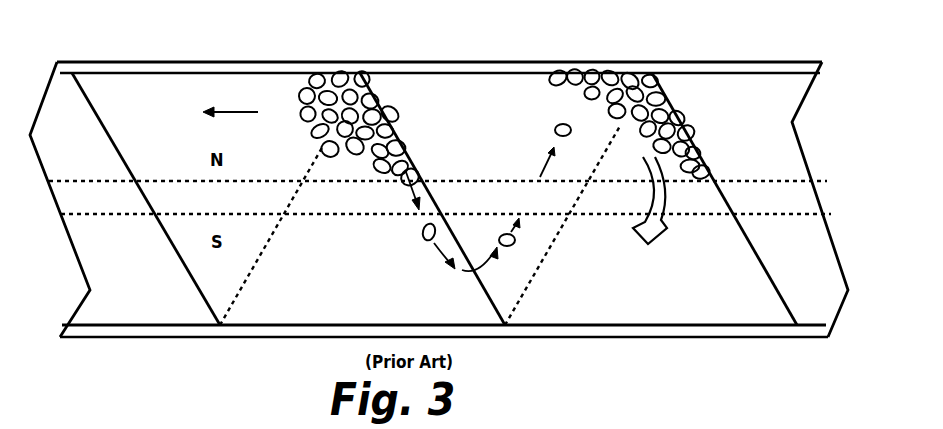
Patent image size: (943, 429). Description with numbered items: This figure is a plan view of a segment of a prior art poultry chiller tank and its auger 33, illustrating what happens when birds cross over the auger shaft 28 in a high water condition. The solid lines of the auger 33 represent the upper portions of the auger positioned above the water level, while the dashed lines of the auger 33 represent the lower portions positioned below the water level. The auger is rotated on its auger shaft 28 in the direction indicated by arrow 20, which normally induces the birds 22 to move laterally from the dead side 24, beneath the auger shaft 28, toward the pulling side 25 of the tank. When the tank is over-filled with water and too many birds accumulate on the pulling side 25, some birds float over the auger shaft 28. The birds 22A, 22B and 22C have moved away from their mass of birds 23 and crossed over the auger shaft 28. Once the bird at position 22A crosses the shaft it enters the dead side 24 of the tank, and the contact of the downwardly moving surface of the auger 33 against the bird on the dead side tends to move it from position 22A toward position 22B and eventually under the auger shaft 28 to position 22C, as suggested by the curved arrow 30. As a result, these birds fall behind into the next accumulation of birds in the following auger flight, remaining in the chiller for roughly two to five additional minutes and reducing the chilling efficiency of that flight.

The arrow 20 is at (135, 343).
The birds 22 is at (373, 126).
The bird position 22A is at (424, 238).
The bird position 22B is at (514, 245).
The bird position 22C is at (555, 128).
The mass of birds 23 is at (300, 102).
The dead side 24 is at (703, 311).
The pulling side 25 is at (748, 111).
The auger shaft 28 is at (111, 203).
The particle rotation direction 30 is at (667, 212).
The auger 33 is at (100, 110).